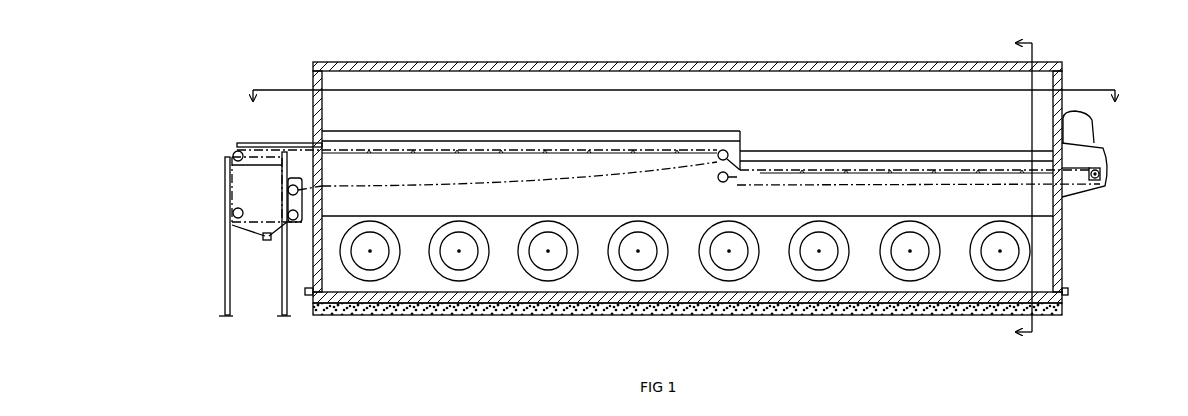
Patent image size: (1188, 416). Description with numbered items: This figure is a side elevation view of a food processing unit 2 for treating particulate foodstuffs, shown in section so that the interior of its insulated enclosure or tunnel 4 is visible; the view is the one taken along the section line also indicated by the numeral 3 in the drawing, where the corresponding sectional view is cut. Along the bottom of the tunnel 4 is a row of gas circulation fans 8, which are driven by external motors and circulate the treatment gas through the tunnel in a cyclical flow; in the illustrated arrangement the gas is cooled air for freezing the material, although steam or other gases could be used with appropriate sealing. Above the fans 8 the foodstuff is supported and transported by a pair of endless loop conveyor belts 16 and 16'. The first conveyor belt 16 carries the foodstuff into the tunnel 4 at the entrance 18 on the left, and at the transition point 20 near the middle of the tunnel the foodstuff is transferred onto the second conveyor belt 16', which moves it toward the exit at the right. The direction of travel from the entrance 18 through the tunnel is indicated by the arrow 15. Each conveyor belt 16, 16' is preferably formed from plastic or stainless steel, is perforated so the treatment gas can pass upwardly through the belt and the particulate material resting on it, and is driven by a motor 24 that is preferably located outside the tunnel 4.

The food processing unit 2 is at (1160, 88).
The section line 3- 3 is at (1015, 189).
The insulated enclosure or tunnel 4 is at (876, 62).
The gas circulation fans 8 is at (545, 262).
The arrow 15 is at (591, 113).
The first conveyor belt 16 is at (247, 233).
The second conveyor belt 16' is at (918, 157).
The entrance 18 is at (314, 118).
The transition point 20 is at (741, 133).
The motor 24 is at (292, 219).